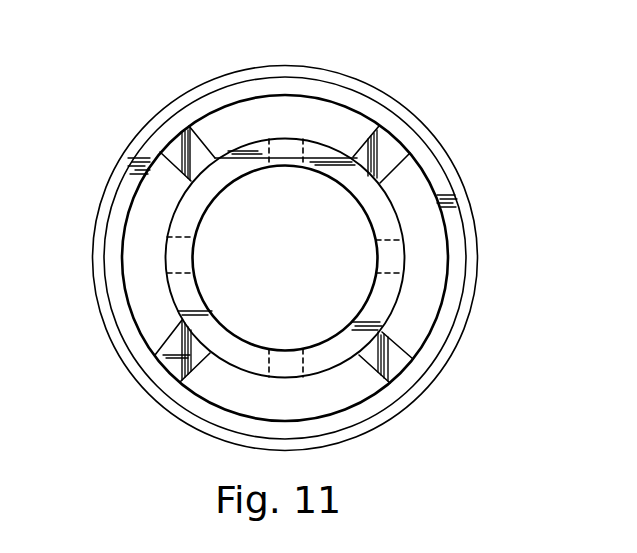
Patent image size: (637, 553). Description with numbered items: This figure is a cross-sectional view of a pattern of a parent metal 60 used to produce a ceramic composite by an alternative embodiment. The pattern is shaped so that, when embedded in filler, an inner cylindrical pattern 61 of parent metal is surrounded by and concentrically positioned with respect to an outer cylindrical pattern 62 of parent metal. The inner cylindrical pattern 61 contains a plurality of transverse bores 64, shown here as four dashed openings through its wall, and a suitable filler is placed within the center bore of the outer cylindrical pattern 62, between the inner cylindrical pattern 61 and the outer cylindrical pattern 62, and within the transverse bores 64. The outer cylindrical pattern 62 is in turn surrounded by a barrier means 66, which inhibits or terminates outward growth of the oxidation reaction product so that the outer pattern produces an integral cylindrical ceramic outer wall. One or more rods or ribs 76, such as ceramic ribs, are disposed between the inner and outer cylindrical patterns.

The pattern of a parent metal 60 is at (440, 117).
The inner cylindrical pattern 61 is at (370, 210).
The outer cylindrical pattern 62 is at (443, 182).
The transverse bores 64 is at (285, 155).
The barrier means 66 is at (342, 78).
The rods or ribs 76 is at (165, 362).